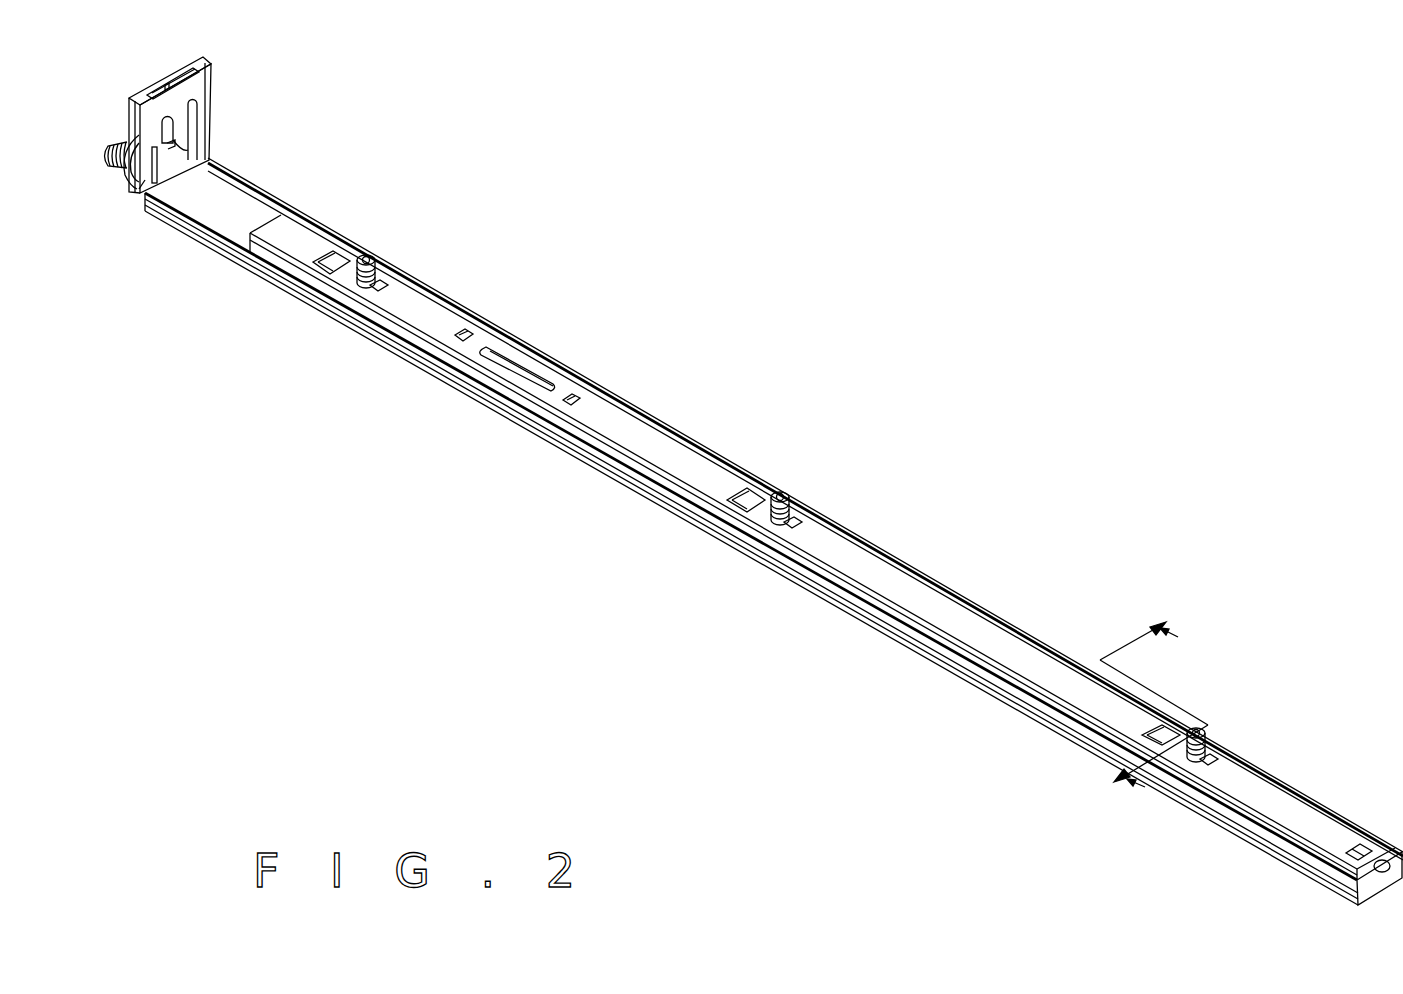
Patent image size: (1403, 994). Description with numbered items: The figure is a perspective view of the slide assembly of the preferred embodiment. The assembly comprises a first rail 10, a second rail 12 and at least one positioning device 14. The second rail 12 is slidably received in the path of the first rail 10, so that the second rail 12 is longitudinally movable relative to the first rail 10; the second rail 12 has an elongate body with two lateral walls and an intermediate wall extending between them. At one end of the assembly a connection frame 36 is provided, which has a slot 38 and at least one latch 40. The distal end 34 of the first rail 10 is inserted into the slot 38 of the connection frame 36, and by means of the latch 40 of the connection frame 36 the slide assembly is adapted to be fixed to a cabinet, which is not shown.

The first rail 10 is at (986, 700).
The second rail 12 is at (982, 592).
The positioning device 14 is at (1212, 740).
The distal end 34 is at (173, 187).
The connection frame 36 is at (139, 261).
The slot 38 is at (157, 188).
The latch 40 is at (104, 175).